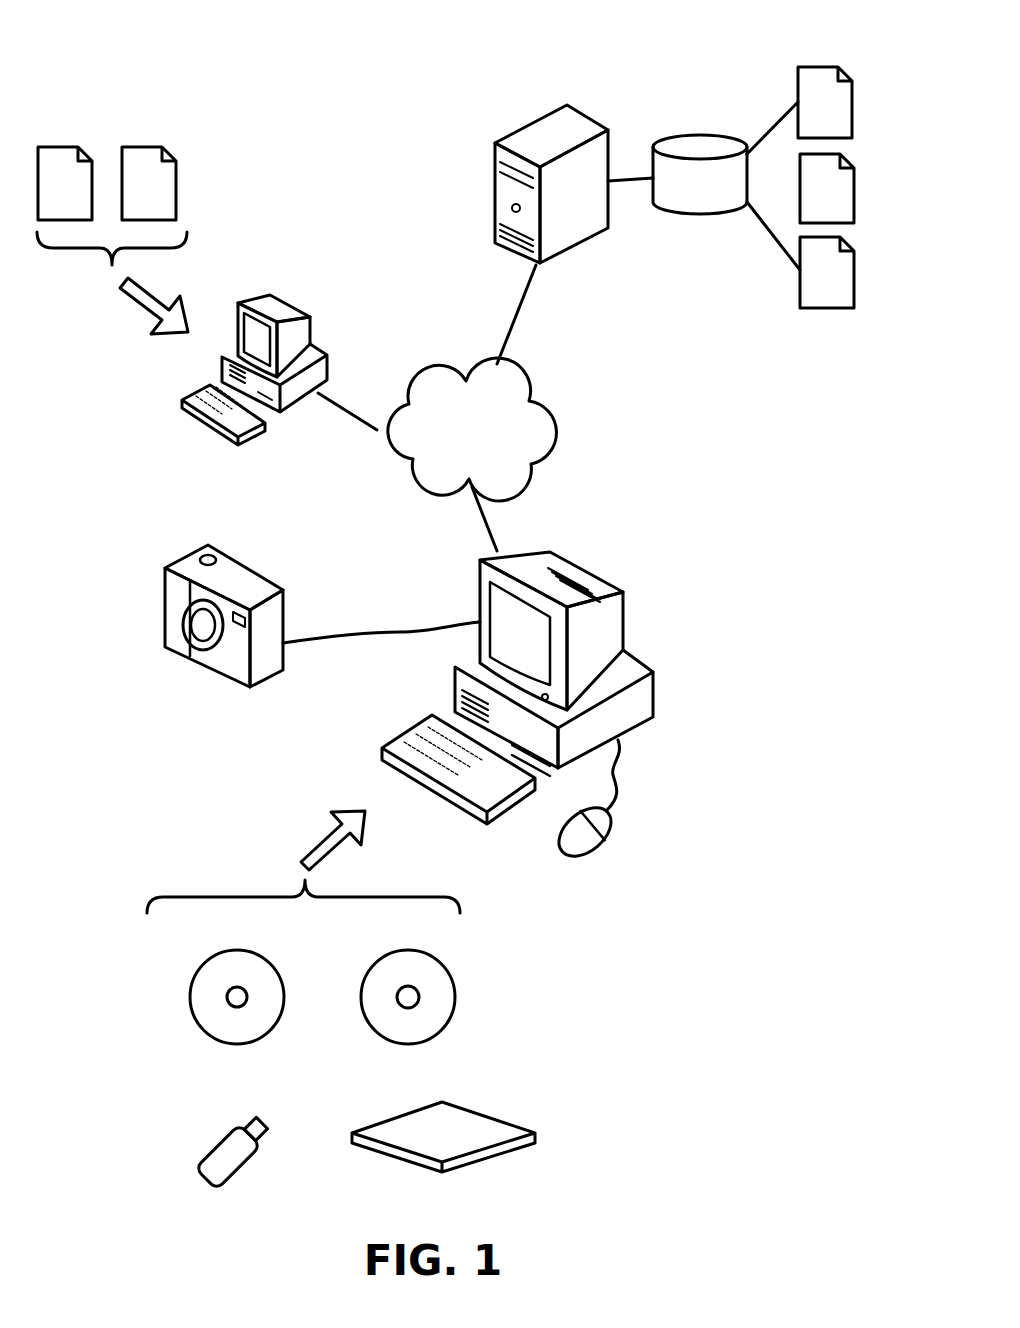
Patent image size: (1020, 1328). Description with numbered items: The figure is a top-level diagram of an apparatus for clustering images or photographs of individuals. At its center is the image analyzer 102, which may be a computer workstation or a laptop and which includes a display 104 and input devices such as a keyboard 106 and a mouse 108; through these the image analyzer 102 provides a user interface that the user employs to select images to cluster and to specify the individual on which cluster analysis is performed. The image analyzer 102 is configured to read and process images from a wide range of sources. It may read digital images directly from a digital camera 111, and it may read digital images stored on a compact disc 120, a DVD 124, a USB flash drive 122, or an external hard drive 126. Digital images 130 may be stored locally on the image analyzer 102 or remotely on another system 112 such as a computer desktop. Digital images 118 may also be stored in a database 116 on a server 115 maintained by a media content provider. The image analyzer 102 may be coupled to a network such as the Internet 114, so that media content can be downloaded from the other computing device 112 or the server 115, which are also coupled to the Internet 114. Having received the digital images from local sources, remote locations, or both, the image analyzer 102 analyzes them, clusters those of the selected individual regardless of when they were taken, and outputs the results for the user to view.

The image analyzer 102 is at (522, 673).
The display 104 is at (478, 620).
The keyboard 106 is at (445, 801).
The mouse 108 is at (560, 849).
The digital camera 111 is at (190, 553).
The another system 112 is at (318, 274).
The Internet 114 is at (454, 457).
The server 115 is at (597, 70).
The database 116 is at (685, 194).
The digital images 118 is at (828, 43).
The compact disc (CD) 120 is at (212, 958).
The USB flash drive 122 is at (222, 1135).
The DVD 124 is at (380, 958).
The external hard drive 126 is at (373, 1122).
The digital images 130 is at (95, 95).